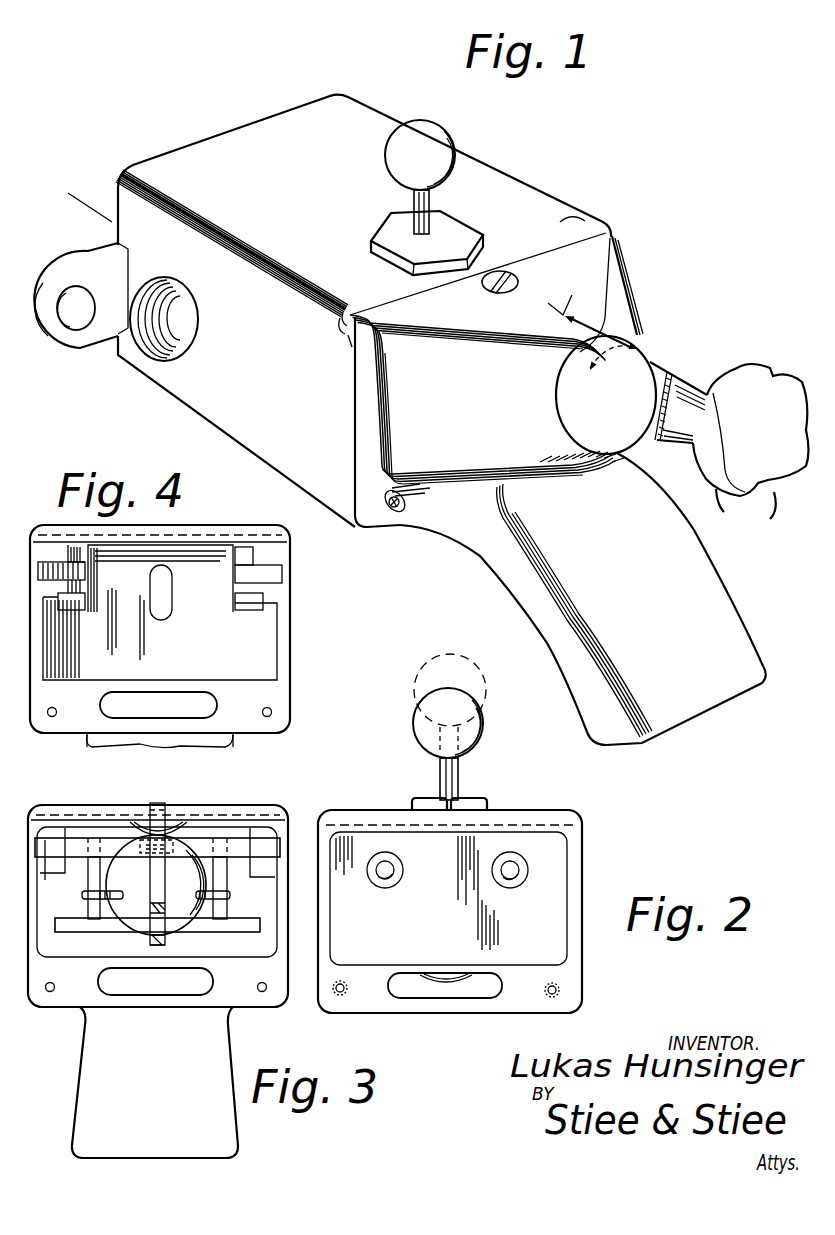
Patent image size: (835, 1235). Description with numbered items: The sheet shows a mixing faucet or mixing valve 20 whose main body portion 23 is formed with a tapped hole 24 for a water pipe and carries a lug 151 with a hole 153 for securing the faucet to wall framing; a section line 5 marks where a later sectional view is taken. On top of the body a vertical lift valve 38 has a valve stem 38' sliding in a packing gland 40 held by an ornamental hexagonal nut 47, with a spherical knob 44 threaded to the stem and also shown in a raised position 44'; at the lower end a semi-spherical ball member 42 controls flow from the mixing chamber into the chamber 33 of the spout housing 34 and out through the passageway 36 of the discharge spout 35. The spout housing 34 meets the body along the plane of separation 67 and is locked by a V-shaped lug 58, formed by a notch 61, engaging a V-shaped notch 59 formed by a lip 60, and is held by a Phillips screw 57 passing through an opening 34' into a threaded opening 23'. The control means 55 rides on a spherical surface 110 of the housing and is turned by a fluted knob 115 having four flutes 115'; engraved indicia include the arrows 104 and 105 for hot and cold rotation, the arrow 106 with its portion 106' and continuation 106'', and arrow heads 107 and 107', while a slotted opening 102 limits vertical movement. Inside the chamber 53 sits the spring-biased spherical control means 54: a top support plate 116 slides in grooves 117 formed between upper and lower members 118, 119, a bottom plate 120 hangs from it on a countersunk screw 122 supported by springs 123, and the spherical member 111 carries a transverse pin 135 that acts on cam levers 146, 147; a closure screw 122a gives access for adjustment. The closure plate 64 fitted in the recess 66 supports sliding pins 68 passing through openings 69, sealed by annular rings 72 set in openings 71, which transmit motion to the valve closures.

In FIG. 1, the mixing valve 20 is at (264, 112).
In FIG. 1, the main body portion 23 is at (259, 417).
In FIG. 2, the main body portion 23 is at (476, 911).
In FIG. 1, the tapped hole 24 is at (150, 353).
In FIG. 1, the lug 151 is at (80, 347).
In FIG. 1, the hole 153 is at (80, 297).
In FIG. 1, the section line 5- 5 is at (79, 222).
In FIG. 1, the spherical knob 44 is at (420, 137).
In FIG. 2, the spherical knob 44 is at (467, 723).
In FIG. 2, the spherical knob in raised position 44' is at (475, 690).
In FIG. 1, the vertical lift valve 38 is at (392, 208).
In FIG. 2, the vertical lift valve 38 is at (482, 775).
In FIG. 1, the valve stem 38' is at (461, 206).
In FIG. 1, the packing gland 40 is at (472, 224).
In FIG. 2, the packing gland 40 is at (425, 795).
In FIG. 1, the ornamental hexagonal nut 47 is at (412, 241).
In FIG. 2, the ornamental hexagonal nut 47 is at (470, 804).
In FIG. 1, the plane of separation 67 is at (578, 223).
In FIG. 1, the closure countersunk screw 122a is at (512, 278).
In FIG. 3, the closure countersunk screw 122a is at (172, 803).
In FIG. 1, the V-shaped transversely extending lug 58 is at (347, 312).
In FIG. 4, the V-shaped transversely extending lug 58 is at (290, 540).
In FIG. 3, the V-shaped transversely extending lug 58 is at (272, 822).
In FIG. 1, the transversely extending notch 61 is at (378, 322).
In FIG. 4, the transversely extending notch 61 is at (193, 535).
In FIG. 1, the V-shaped notch 59 is at (343, 330).
In FIG. 2, the V-shaped notch 59 is at (527, 822).
In FIG. 1, the transversely extending lip 60 is at (350, 338).
In FIG. 2, the transversely extending lip 60 is at (377, 823).
In FIG. 1, the spout housing 34 is at (508, 435).
In FIG. 4, the spout housing 34 is at (188, 636).
In FIG. 3, the spout housing 34 is at (175, 890).
In FIG. 1, the spherical surface 110 is at (550, 414).
In FIG. 1, the arrow head indicia 107' is at (575, 294).
In FIG. 1, the arrow head 107 is at (623, 295).
In FIG. 1, the arrow 106 is at (663, 305).
In FIG. 1, the arrow continuation 106'' is at (575, 331).
In FIG. 1, the arrow for cold rotation 105 is at (640, 333).
In FIG. 1, the arrow portion 106' is at (703, 331).
In FIG. 1, the arrow for hot rotation 104 is at (608, 350).
In FIG. 1, the control means 55 is at (688, 377).
In FIG. 1, the fluted knob 115 is at (751, 419).
In FIG. 1, the flutes 115' is at (746, 505).
In FIG. 1, the Phillips machine screw 57 is at (393, 516).
In FIG. 1, the discharge spout 35 is at (648, 579).
In FIG. 4, the discharge spout 35 is at (208, 748).
In FIG. 3, the discharge spout 35 is at (162, 1111).
In FIG. 4, the chamber 53 is at (213, 659).
In FIG. 3, the chamber 53 is at (210, 954).
In FIG. 4, the slotted opening 102 is at (166, 592).
In FIG. 4, the groove 117 is at (45, 565).
In FIG. 3, the groove 117 is at (267, 856).
In FIG. 4, the upper member 118 is at (88, 554).
In FIG. 3, the upper member 118 is at (62, 822).
In FIG. 4, the lower member 119 is at (62, 597).
In FIG. 3, the lower member 119 is at (82, 870).
In FIG. 4, the passageway 36 is at (134, 692).
In FIG. 3, the passageway 36 is at (167, 992).
In FIG. 4, the opening 34' is at (179, 733).
In FIG. 3, the opening 34' is at (160, 1017).
In FIG. 3, the spring-biased spherical control means 54 is at (110, 830).
In FIG. 3, the spherical member 111 is at (148, 884).
In FIG. 3, the spring 123 is at (168, 823).
In FIG. 3, the countersunk head machine screw 122 is at (147, 825).
In FIG. 3, the bottom plate 120 is at (77, 930).
In FIG. 3, the cam lever 147 is at (97, 912).
In FIG. 3, the cam lever 146 is at (219, 912).
In FIG. 3, the transverse pin 135 is at (88, 897).
In FIG. 3, the top support plate 116 is at (50, 845).
In FIG. 2, the recess 66 is at (565, 860).
In FIG. 2, the closure plate 64 is at (453, 939).
In FIG. 2, the sliding pin 68 is at (388, 867).
In FIG. 2, the opening 69 is at (385, 879).
In FIG. 2, the annular ring 72 is at (396, 877).
In FIG. 2, the opening 71 is at (506, 886).
In FIG. 2, the semi-spherical ball member 42 is at (434, 982).
In FIG. 2, the chamber 33 is at (483, 996).
In FIG. 2, the threaded opening 23' is at (477, 1010).